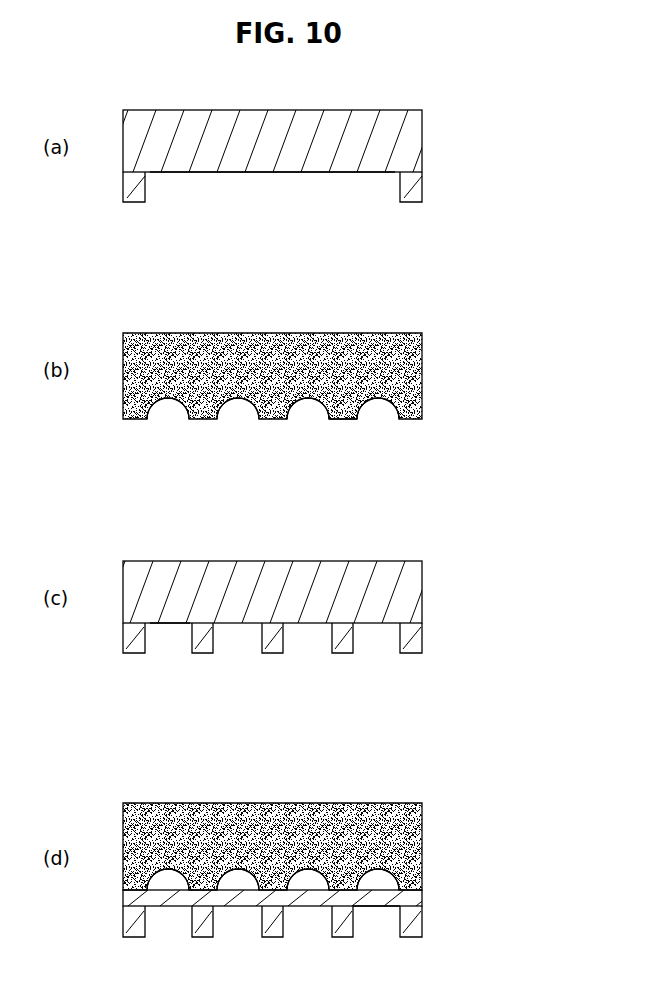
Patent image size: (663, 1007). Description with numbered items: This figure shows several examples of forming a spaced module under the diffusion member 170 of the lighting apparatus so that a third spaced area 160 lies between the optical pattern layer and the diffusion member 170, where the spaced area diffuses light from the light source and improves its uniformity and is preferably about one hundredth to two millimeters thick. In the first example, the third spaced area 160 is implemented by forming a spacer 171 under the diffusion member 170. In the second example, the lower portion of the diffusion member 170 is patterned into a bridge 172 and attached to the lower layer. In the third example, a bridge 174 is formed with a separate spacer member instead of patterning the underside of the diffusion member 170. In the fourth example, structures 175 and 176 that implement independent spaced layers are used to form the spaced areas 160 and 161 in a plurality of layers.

The diffusion member 170 is at (415, 145).
The spacer 171 is at (417, 190).
The third spaced area 160 is at (303, 187).
The bridge 172 is at (340, 422).
The bridge 174 is at (275, 648).
The structure 175 is at (415, 895).
The structure 176 is at (418, 923).
The spaced area 161 is at (387, 918).